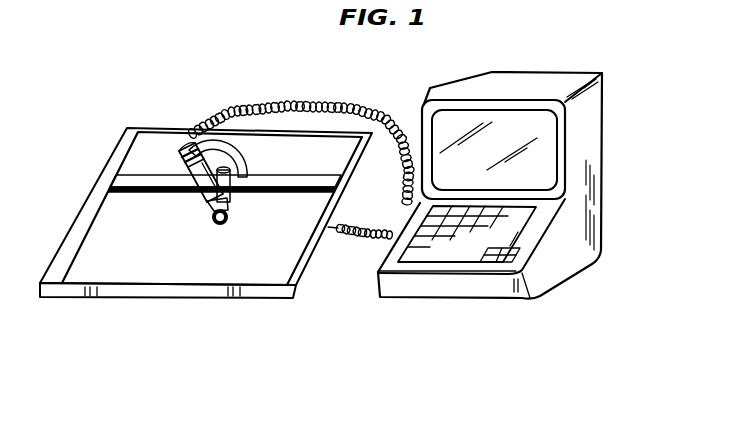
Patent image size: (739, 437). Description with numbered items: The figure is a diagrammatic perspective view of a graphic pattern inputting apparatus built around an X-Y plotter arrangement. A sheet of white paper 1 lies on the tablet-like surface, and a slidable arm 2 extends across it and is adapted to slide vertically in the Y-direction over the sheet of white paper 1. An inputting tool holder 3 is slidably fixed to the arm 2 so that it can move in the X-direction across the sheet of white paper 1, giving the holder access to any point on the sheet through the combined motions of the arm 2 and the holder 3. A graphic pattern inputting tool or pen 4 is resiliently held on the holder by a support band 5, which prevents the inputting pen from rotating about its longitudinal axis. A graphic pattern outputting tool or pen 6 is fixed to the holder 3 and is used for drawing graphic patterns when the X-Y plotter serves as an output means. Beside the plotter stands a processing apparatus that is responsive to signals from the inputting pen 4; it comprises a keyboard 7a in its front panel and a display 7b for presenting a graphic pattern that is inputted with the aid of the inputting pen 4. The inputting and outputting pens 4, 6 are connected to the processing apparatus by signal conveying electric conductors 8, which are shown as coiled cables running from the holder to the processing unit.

The sheet of white paper 1 is at (128, 267).
The slidable arm 2 is at (165, 177).
The inputting tool holder 3 is at (229, 203).
The graphic pattern inputting tool or pen 4 is at (203, 202).
The support band 5 is at (206, 142).
The graphic pattern outputting tool or pen 6 is at (234, 150).
The keyboard 7a is at (510, 227).
The display 7b is at (538, 148).
The signal conveying electric conductors 8 is at (359, 107).